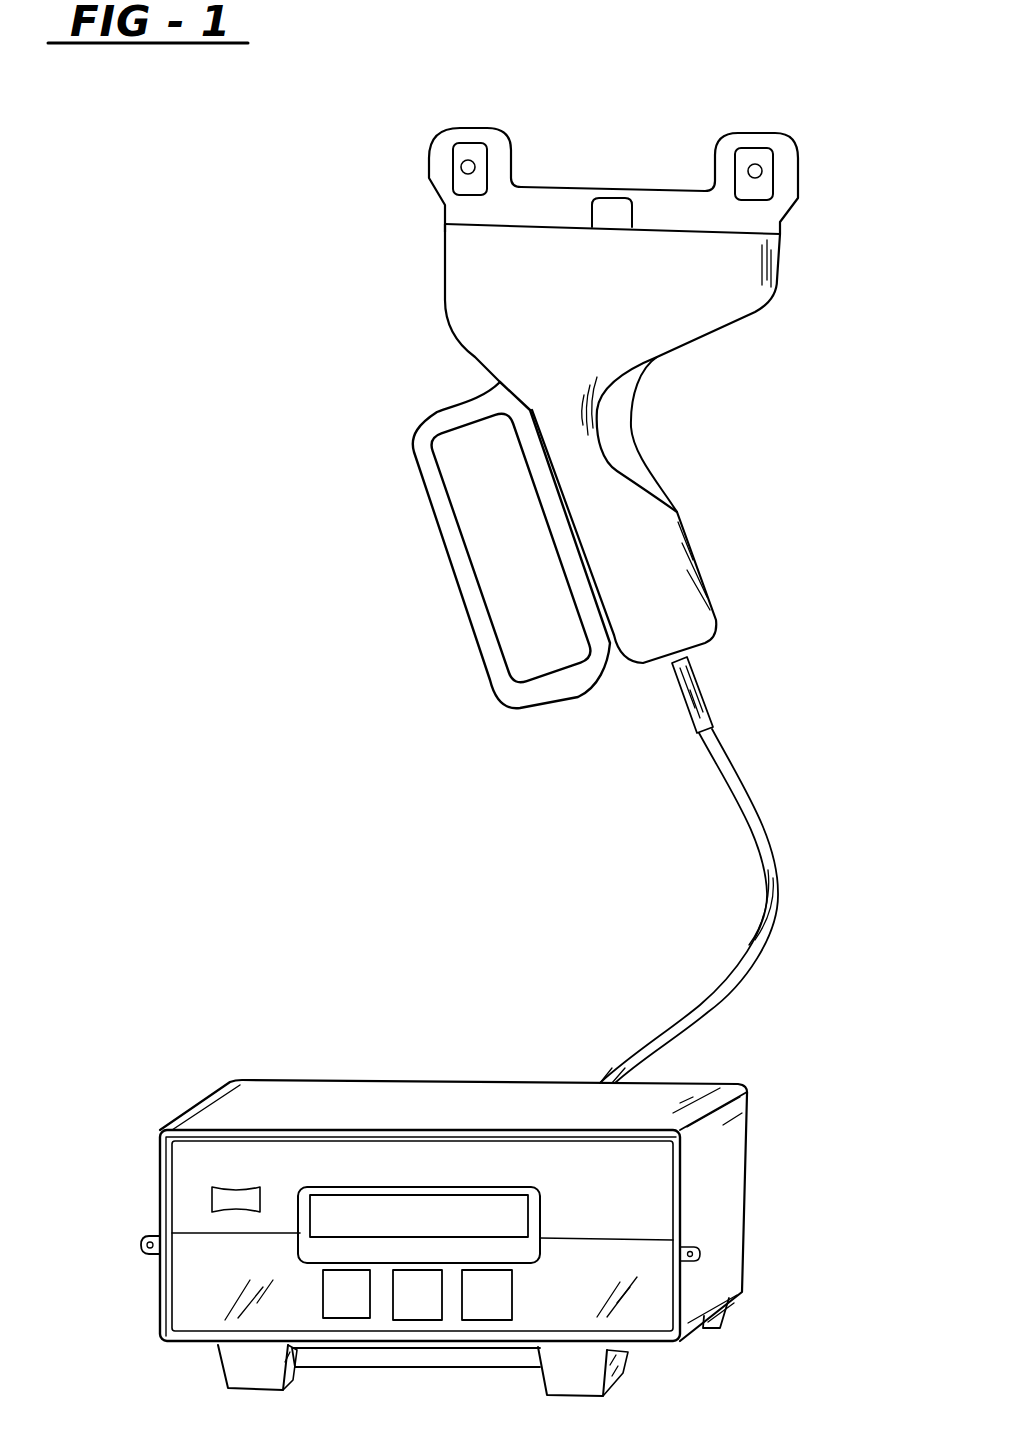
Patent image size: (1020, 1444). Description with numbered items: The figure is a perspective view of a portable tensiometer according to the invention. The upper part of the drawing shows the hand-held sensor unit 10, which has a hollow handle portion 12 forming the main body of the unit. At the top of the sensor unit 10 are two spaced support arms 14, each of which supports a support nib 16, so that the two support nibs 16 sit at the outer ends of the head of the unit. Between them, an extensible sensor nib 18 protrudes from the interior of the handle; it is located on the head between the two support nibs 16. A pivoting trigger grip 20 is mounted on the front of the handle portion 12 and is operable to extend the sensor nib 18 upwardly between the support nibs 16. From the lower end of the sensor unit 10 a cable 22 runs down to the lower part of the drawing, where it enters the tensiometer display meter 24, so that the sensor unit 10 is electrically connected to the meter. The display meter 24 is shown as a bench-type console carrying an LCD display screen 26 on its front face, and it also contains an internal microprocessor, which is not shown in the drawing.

The hand-held sensor unit 10 is at (383, 346).
The hollow handle portion 12 is at (633, 452).
The support arms 14 is at (462, 210).
The support nib 16 is at (478, 155).
The extensible sensor nib 18 is at (613, 215).
The pivoting trigger grip 20 is at (463, 577).
The cable 22 is at (713, 755).
The tensiometer display meter 24 is at (727, 1173).
The LCD display screen 26 is at (322, 1227).